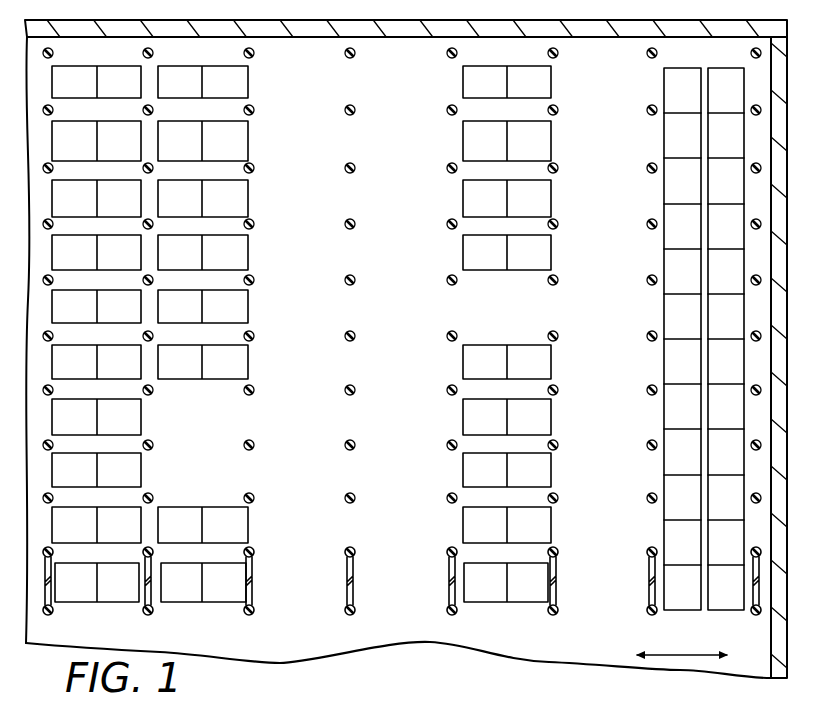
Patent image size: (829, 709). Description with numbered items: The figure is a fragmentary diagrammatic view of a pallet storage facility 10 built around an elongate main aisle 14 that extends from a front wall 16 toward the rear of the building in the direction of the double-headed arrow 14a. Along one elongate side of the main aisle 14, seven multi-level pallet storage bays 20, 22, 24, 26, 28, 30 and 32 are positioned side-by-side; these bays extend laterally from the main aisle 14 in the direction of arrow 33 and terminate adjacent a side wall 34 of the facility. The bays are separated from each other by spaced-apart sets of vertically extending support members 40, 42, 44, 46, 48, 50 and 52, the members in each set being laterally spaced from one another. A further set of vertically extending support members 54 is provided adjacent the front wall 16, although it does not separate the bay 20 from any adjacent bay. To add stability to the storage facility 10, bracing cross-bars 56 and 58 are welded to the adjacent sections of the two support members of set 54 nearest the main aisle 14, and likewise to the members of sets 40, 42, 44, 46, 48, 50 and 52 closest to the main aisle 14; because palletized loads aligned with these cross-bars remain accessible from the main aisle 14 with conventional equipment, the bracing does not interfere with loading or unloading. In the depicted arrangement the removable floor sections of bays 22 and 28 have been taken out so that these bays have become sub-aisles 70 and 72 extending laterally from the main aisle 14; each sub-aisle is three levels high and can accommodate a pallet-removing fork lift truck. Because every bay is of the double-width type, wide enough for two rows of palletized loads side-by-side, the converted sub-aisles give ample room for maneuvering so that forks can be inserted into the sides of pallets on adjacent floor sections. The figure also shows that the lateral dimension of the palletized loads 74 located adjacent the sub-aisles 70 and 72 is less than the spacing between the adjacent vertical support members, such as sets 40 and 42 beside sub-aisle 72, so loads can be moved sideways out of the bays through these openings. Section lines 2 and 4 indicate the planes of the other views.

The pallet storage facility 10 is at (342, 25).
The main aisle 14 is at (594, 651).
The double-headed arrow 14a is at (690, 656).
The front wall 16 is at (776, 400).
The pallet storage bay 20 is at (697, 55).
The pallet storage bay 22 is at (598, 60).
The pallet storage bay 24 is at (508, 47).
The pallet storage bay 26 is at (398, 52).
The pallet storage bay 28 is at (287, 57).
The pallet storage bay 30 is at (204, 50).
The pallet storage bay 32 is at (95, 48).
The arrow 33 is at (796, 410).
The side wall 34 is at (312, 33).
The set of vertically extending support members 40 is at (655, 612).
The set of vertically extending support members 42 is at (553, 612).
The set of vertically extending support members 44 is at (453, 612).
The set of vertically extending support members 46 is at (357, 605).
The set of vertically extending support members 48 is at (249, 610).
The set of vertically extending support members 50 is at (149, 611).
The set of vertically extending support members 52 is at (55, 608).
The set of vertically extending support members 54 is at (756, 612).
The bracing cross-bar 56 is at (258, 595).
The bracing cross-bar 58 is at (256, 565).
The sub-aisle 70 is at (313, 456).
The sub-aisle 72 is at (612, 456).
The palletized loads 74 is at (250, 197).
The section line 2- 2 is at (36, 597).
The section line 4- 4 is at (317, 575).